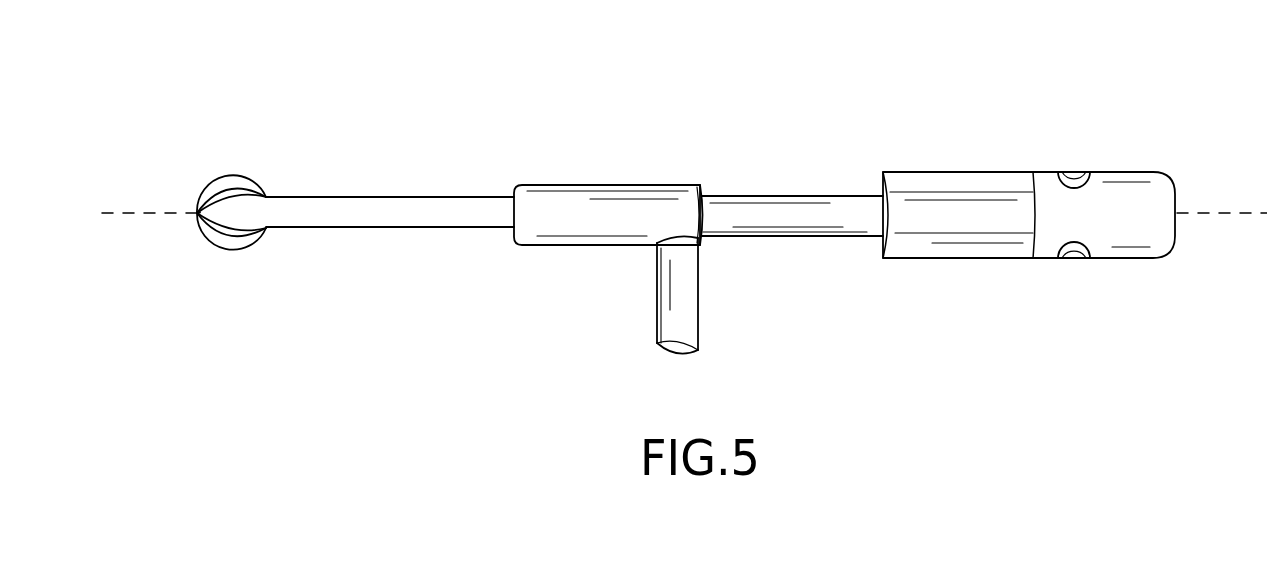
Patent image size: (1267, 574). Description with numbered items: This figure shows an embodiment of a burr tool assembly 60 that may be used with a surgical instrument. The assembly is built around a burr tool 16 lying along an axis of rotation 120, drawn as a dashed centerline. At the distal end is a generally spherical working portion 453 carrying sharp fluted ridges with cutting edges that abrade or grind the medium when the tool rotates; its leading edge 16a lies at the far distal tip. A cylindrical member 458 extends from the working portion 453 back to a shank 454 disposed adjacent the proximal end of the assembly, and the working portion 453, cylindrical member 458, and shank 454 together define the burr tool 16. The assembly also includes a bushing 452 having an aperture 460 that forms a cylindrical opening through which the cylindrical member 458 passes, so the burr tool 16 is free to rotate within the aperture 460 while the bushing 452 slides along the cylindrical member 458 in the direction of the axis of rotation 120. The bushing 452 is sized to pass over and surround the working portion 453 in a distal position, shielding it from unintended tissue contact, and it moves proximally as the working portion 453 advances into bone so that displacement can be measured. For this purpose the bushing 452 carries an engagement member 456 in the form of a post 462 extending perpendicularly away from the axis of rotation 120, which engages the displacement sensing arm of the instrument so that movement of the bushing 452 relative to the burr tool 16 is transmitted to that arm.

The burr tool assembly 60 is at (664, 210).
The working portion 453 is at (249, 174).
The leading edge 16a is at (190, 216).
The cylindrical member 458 is at (472, 228).
The bushing 452 is at (595, 195).
The aperture 460 is at (703, 193).
The burr tool 16 is at (758, 210).
The engagement member 456 is at (722, 317).
The post 462 is at (683, 353).
The shank 454 is at (970, 259).
The axis of rotation 120 is at (1238, 212).